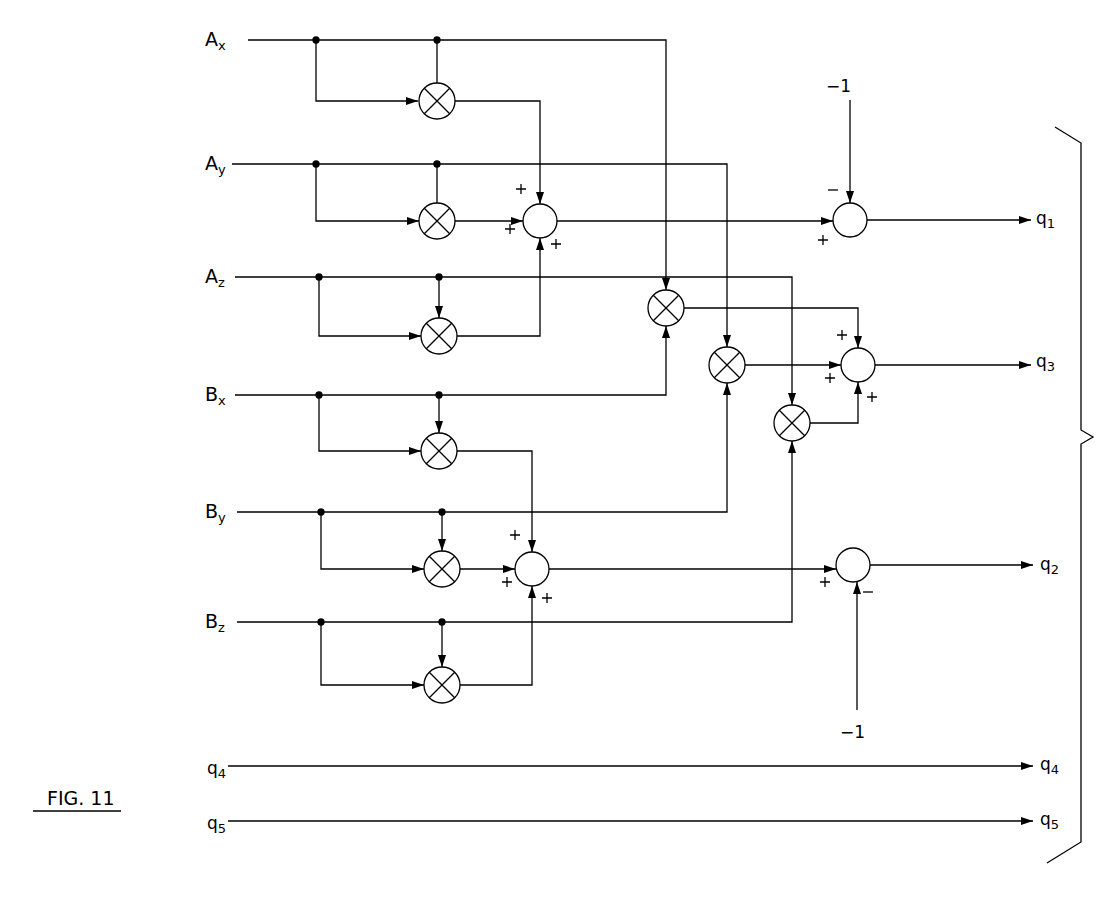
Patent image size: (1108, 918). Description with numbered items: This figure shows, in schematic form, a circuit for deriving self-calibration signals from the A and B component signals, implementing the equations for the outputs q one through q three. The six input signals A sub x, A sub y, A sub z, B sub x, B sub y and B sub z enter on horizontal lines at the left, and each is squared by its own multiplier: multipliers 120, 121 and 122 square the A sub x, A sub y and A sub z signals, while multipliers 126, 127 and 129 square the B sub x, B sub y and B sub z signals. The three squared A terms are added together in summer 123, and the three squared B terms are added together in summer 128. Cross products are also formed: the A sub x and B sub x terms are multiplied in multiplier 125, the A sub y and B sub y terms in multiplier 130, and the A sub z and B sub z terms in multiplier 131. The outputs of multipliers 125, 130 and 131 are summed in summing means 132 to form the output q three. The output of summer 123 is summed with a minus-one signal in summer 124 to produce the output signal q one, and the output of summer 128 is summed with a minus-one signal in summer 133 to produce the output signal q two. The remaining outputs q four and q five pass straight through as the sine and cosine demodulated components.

The multiplier 120 is at (445, 110).
The multiplier 121 is at (445, 230).
The multiplier 122 is at (447, 345).
The summer 123 is at (550, 232).
The summer 124 is at (862, 232).
The multiplier 125 is at (651, 310).
The multiplier 126 is at (447, 460).
The multiplier 127 is at (436, 581).
The summer 128 is at (545, 578).
The multiplier 129 is at (456, 693).
The multiplier 130 is at (714, 375).
The multiplier 131 is at (797, 433).
The summing means 132 is at (870, 375).
The summer 133 is at (866, 575).